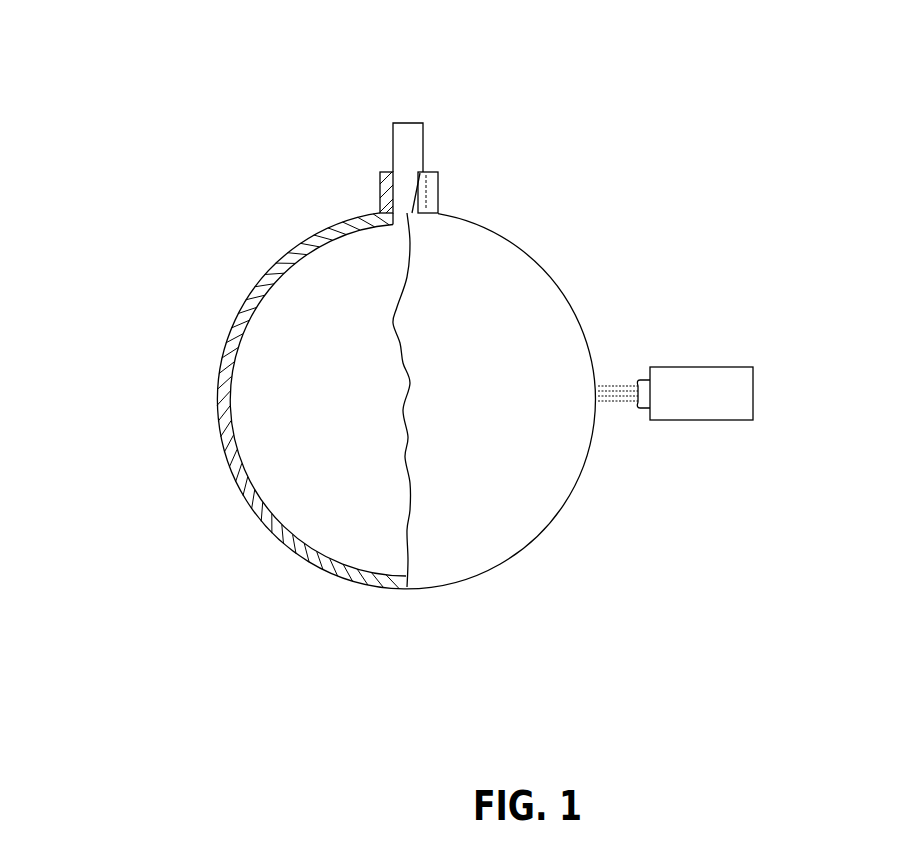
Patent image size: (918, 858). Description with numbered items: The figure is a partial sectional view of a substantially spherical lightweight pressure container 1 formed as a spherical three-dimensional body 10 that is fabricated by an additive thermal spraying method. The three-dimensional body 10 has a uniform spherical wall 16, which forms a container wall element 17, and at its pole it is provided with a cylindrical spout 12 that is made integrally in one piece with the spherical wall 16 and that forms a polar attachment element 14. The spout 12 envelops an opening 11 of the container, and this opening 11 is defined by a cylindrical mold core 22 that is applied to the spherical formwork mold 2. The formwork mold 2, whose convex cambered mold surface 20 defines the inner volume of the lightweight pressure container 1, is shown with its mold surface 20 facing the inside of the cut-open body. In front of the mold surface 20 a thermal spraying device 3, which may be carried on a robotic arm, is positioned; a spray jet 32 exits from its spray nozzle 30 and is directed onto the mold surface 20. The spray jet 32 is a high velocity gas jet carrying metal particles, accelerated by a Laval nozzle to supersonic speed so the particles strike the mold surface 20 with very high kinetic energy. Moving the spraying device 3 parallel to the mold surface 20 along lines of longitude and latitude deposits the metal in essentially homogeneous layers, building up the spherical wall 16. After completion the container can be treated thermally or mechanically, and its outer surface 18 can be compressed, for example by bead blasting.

The lightweight pressure container 1 is at (558, 257).
The formwork mold 2 is at (278, 437).
The thermal spraying device 3 is at (730, 356).
The three-dimensional body 10 is at (288, 548).
The opening 11 is at (398, 195).
The spout 12 is at (440, 194).
The polar attachment element 14 is at (455, 165).
The spherical wall 16 is at (218, 376).
The container wall element 17 is at (268, 256).
The outer surface 18 is at (507, 530).
The mold surface 20 is at (333, 462).
The cylindrical mold core 22 is at (410, 133).
The spray nozzle 30 is at (643, 410).
The spray jet 32 is at (622, 385).